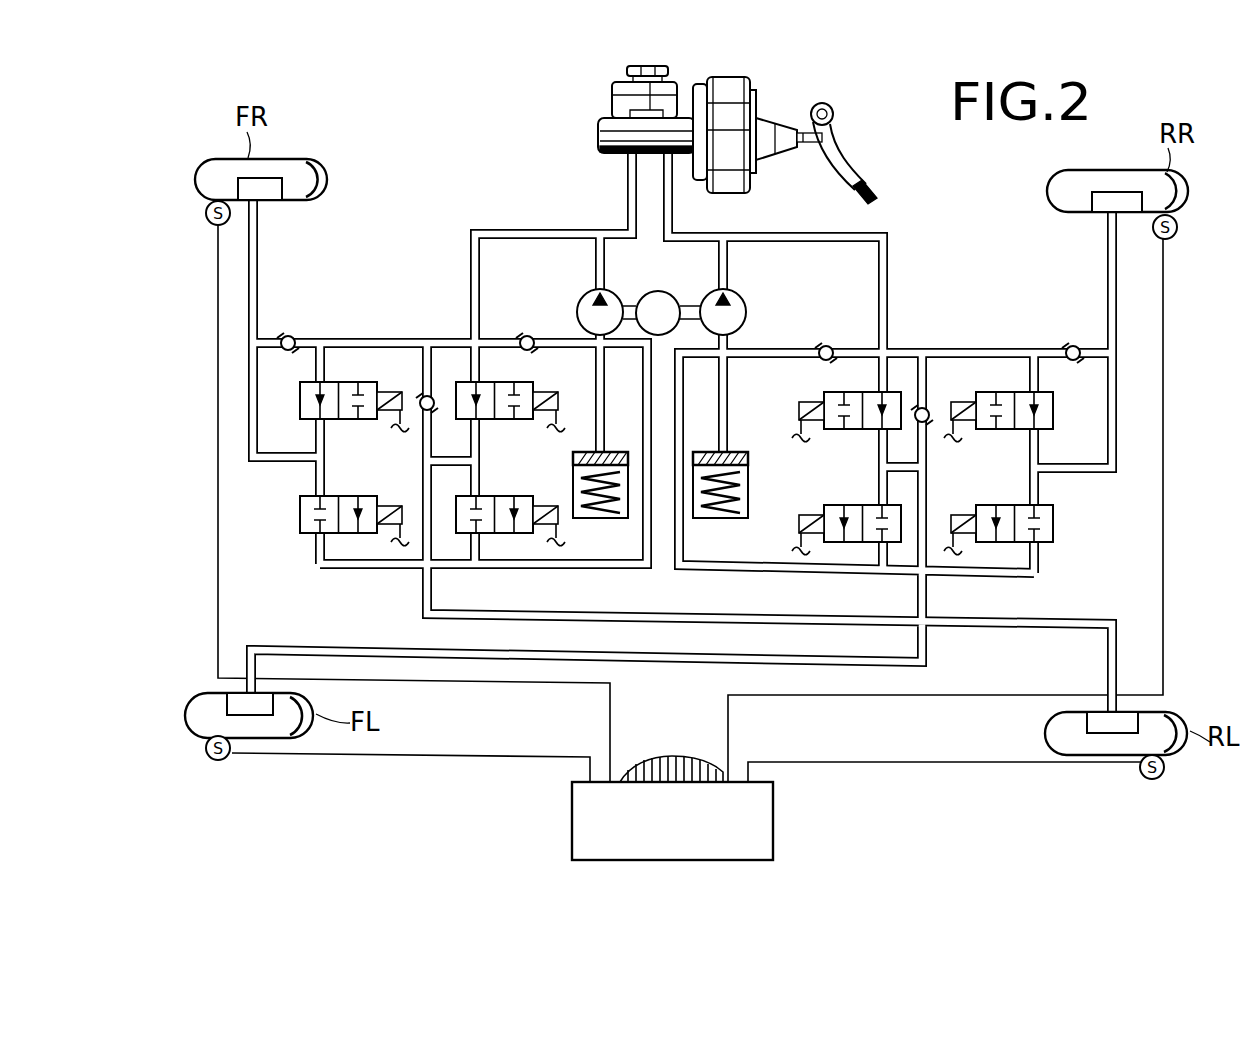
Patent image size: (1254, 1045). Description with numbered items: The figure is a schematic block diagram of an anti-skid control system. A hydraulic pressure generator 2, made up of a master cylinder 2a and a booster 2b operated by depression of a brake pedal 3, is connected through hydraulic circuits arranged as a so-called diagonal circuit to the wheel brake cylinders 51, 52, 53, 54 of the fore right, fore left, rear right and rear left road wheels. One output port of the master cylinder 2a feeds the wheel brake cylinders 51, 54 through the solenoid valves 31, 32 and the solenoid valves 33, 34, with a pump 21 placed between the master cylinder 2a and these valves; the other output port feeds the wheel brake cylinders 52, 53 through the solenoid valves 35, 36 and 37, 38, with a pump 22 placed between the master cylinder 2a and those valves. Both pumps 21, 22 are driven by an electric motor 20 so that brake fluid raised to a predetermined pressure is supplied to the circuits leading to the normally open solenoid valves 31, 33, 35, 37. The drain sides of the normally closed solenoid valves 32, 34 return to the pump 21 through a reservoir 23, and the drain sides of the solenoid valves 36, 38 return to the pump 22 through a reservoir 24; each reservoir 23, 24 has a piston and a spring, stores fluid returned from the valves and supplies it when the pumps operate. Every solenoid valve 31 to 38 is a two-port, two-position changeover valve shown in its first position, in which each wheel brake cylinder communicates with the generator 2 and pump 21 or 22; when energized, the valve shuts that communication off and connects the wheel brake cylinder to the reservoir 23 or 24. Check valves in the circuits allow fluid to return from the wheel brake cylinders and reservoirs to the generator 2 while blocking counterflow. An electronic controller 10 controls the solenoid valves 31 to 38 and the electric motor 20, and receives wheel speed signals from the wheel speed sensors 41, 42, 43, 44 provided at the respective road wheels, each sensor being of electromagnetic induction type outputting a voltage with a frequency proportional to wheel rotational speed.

The hydraulic pressure generator 2 is at (610, 112).
The master cylinder 2a is at (602, 150).
The booster 2b is at (747, 183).
The brake pedal 3 is at (835, 172).
The electronic controller 10 is at (775, 820).
The electric motor 20 is at (677, 291).
The pump 21 is at (612, 292).
The pump 22 is at (743, 292).
The reservoir 23 is at (597, 519).
The reservoir 24 is at (721, 519).
The solenoid valve 31 is at (350, 364).
The solenoid valve 32 is at (363, 496).
The solenoid valve 33 is at (522, 383).
The solenoid valve 34 is at (525, 496).
The solenoid valve 35 is at (840, 392).
The solenoid valve 36 is at (847, 505).
The solenoid valve 37 is at (1010, 392).
The solenoid valve 38 is at (993, 505).
The wheel speed sensor 41 is at (212, 226).
The wheel speed sensor 42 is at (228, 758).
The wheel speed sensor 43 is at (1180, 234).
The wheel speed sensor 44 is at (1141, 778).
The wheel brake cylinder 51 is at (270, 192).
The wheel brake cylinder 52 is at (267, 700).
The wheel brake cylinder 53 is at (1102, 205).
The wheel brake cylinder 54 is at (1103, 720).